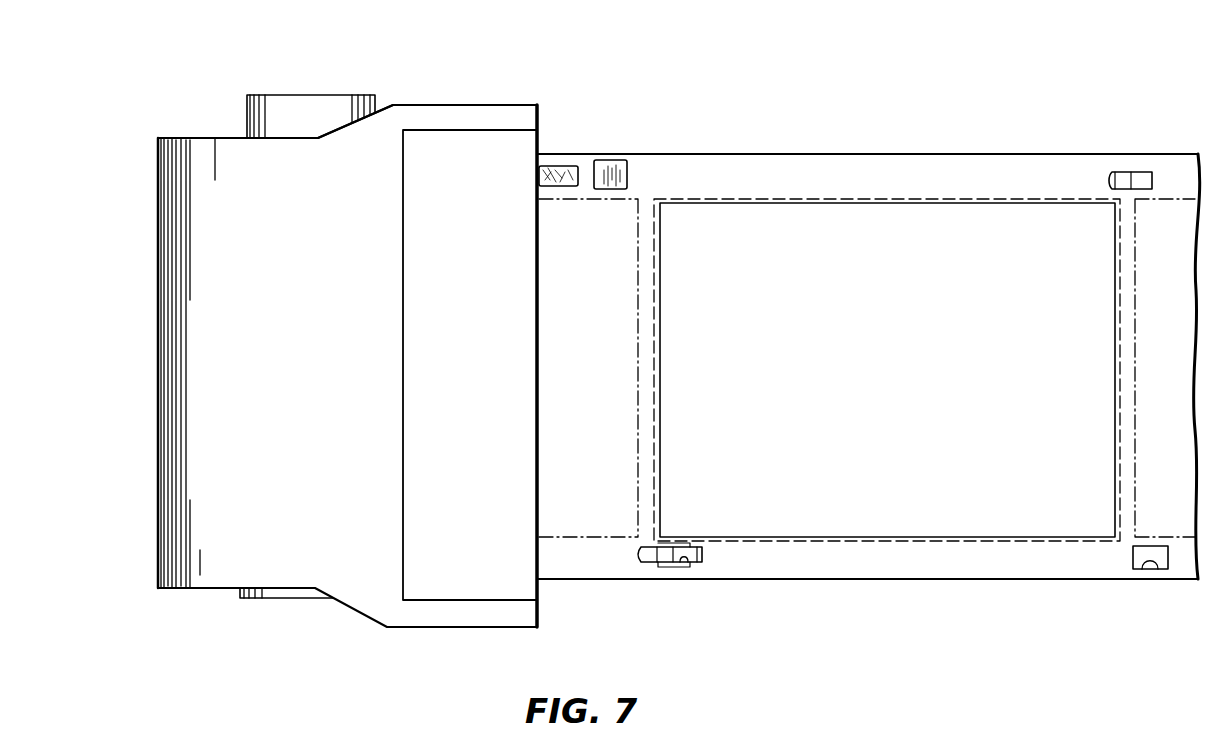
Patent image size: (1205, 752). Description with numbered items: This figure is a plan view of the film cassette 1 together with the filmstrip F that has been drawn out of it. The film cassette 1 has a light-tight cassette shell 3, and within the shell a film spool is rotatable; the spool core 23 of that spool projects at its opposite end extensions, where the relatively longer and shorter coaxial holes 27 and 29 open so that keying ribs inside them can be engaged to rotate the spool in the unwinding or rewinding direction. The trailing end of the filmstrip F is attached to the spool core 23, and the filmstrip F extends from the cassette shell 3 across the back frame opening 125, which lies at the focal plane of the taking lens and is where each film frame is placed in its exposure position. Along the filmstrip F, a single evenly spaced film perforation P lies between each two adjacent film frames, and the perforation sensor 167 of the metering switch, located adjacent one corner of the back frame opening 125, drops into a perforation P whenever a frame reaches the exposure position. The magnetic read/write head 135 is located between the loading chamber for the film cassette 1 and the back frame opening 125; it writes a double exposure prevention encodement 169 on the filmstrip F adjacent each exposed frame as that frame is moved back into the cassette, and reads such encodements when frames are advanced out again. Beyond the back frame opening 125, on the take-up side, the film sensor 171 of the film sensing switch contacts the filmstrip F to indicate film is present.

The film cassette 1 is at (196, 130).
The cassette shell 3 is at (164, 183).
The spool core 23 is at (320, 104).
The longer coaxial hole 27 is at (240, 598).
The shorter coaxial hole 29 is at (250, 100).
The back frame opening 125 is at (722, 196).
The magnetic read/write head 135 is at (612, 163).
The perforation sensor 167 is at (663, 563).
The double exposure prevention encodement 169 is at (572, 168).
The film sensor 171 is at (1136, 180).
The filmstrip F is at (875, 583).
The film perforation P is at (684, 563).